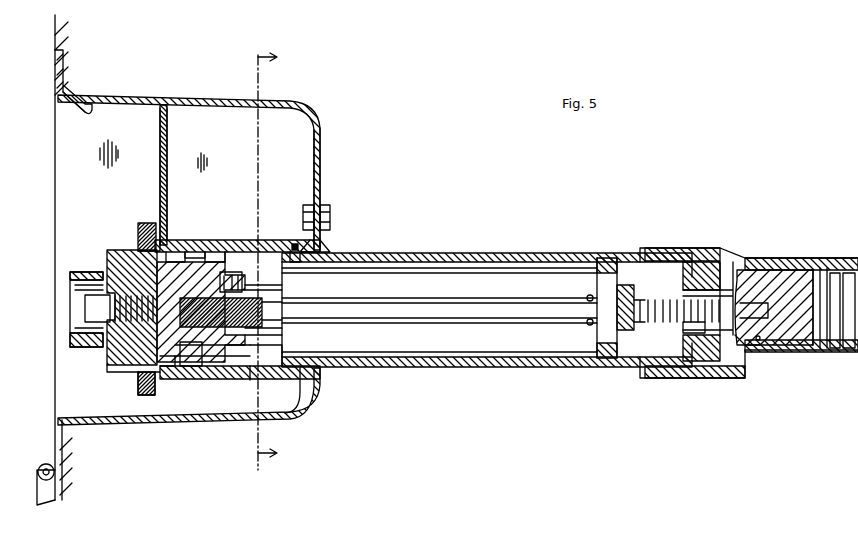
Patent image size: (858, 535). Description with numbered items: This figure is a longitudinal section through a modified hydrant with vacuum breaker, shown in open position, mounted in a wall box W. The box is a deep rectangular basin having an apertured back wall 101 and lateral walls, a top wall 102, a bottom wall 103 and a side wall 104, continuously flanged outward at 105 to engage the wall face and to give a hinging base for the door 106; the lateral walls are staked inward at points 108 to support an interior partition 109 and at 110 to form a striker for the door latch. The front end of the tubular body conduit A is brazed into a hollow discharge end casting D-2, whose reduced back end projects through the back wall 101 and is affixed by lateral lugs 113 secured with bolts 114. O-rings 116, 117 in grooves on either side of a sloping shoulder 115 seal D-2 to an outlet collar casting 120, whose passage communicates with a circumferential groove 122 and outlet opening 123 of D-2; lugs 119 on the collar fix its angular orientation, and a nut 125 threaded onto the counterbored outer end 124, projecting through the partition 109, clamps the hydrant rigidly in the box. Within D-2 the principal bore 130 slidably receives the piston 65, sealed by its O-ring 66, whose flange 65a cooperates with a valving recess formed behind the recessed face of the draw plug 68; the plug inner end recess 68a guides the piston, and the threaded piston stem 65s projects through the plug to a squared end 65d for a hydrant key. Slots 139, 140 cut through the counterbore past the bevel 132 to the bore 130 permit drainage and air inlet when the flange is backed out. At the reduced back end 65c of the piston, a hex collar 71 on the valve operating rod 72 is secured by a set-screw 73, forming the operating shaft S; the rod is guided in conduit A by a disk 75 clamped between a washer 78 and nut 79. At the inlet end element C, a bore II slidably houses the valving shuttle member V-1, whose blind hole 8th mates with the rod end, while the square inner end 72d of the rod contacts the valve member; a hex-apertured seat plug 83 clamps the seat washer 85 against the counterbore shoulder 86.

The wall box W is at (135, 90).
The outward flange 105 is at (66, 60).
The striker 110 is at (95, 108).
The door 106 is at (55, 500).
The top lateral wall 102 is at (238, 98).
The back wall 101 is at (320, 140).
The side lateral wall 104 is at (243, 138).
The staked points 108 is at (168, 108).
The interior partition 109 is at (160, 142).
The circumferential groove 122 is at (236, 240).
The drainage and air inlet slot 140 is at (138, 238).
The nut 125 is at (145, 226).
The counterbored outer end 124 is at (168, 238).
The O-ring 117 is at (180, 240).
The sloping shoulder 115 is at (208, 238).
The O-ring 116 is at (290, 240).
The ears or lugs 119 is at (298, 222).
The lateral lugs 113 is at (306, 203).
The bolts 114 is at (324, 203).
The discharge end casting D-2 is at (328, 240).
The tubular body conduit A is at (500, 250).
The valve operating rod 72 is at (532, 298).
The valve operating shaft structure S is at (411, 287).
The guide and support disk 75 is at (597, 282).
The washer 78 is at (587, 295).
The nut 79 is at (636, 292).
The inlet end element C is at (722, 248).
The seat plug 83 is at (708, 260).
The inner end of rod 72d is at (682, 333).
The seat washer element 85 is at (740, 262).
The valving shuttle member V-1 is at (780, 270).
The counterbore shoulder 86 is at (740, 345).
The bore II is at (757, 342).
The blind hole 8th is at (765, 320).
The squared end 65d is at (96, 280).
The draw plug 68 is at (108, 252).
The piston stem 65s is at (110, 355).
The plug inner end recess 68a is at (116, 386).
The piston 65 is at (250, 330).
The flange 65a is at (225, 240).
The set-screw 73 is at (243, 278).
The hex collar 71 is at (268, 288).
The reduced back end 65c is at (288, 331).
The bevel 132 is at (205, 350).
The principal bore 130 is at (270, 362).
The drainage and air inlet slot 139 is at (174, 382).
The O-ring 66 is at (206, 380).
The outlet opening 123 is at (266, 380).
The outlet collar casting 120 is at (318, 405).
The bottom lateral wall 103 is at (266, 440).